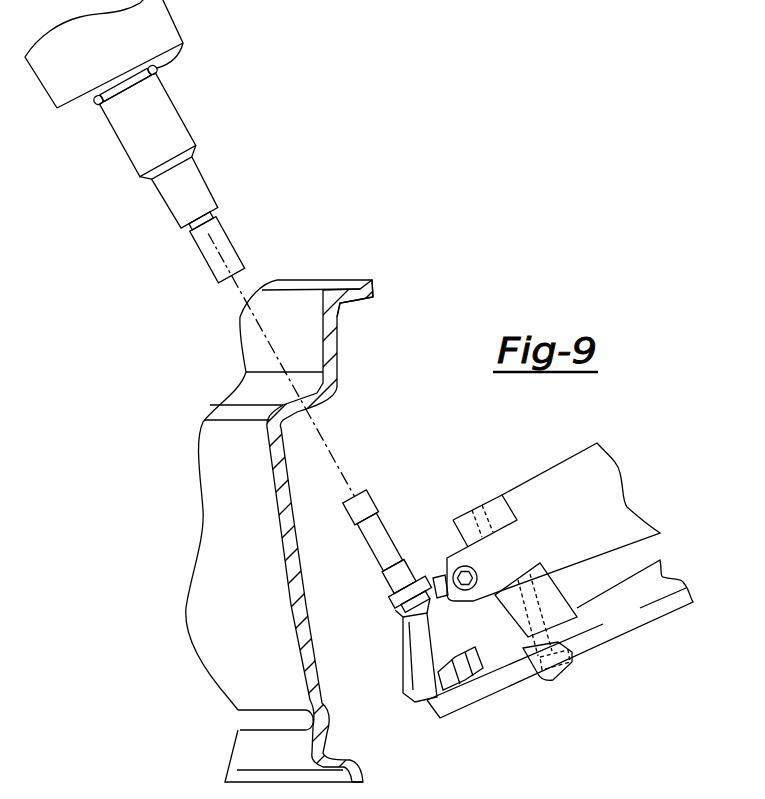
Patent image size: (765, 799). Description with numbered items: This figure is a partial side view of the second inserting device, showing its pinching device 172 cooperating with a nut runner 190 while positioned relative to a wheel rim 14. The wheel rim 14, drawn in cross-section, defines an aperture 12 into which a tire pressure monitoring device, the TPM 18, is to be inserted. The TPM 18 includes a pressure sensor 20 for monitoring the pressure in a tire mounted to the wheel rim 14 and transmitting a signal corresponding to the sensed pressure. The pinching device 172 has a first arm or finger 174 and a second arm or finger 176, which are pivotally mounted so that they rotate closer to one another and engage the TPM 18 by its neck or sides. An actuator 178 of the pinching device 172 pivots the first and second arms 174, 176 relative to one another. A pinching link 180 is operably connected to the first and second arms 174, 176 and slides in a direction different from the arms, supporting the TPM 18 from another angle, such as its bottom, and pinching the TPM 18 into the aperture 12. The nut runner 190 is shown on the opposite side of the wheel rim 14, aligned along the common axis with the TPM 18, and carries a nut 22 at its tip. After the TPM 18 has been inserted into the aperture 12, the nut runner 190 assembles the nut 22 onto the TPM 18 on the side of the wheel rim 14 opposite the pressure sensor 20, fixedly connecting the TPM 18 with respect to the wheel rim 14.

The aperture 12 is at (322, 397).
The wheel rim 14 is at (372, 287).
The tire pressure monitoring device (TPM) 18 is at (370, 544).
The pressure sensor 20 is at (410, 643).
The nut 22 is at (232, 248).
The pinching device 172 is at (633, 451).
The first arm or finger 174 is at (439, 543).
The second arm or finger 176 is at (427, 583).
The actuator 178 is at (627, 512).
The pinching link 180 is at (465, 700).
The nut runner 190 is at (176, 32).